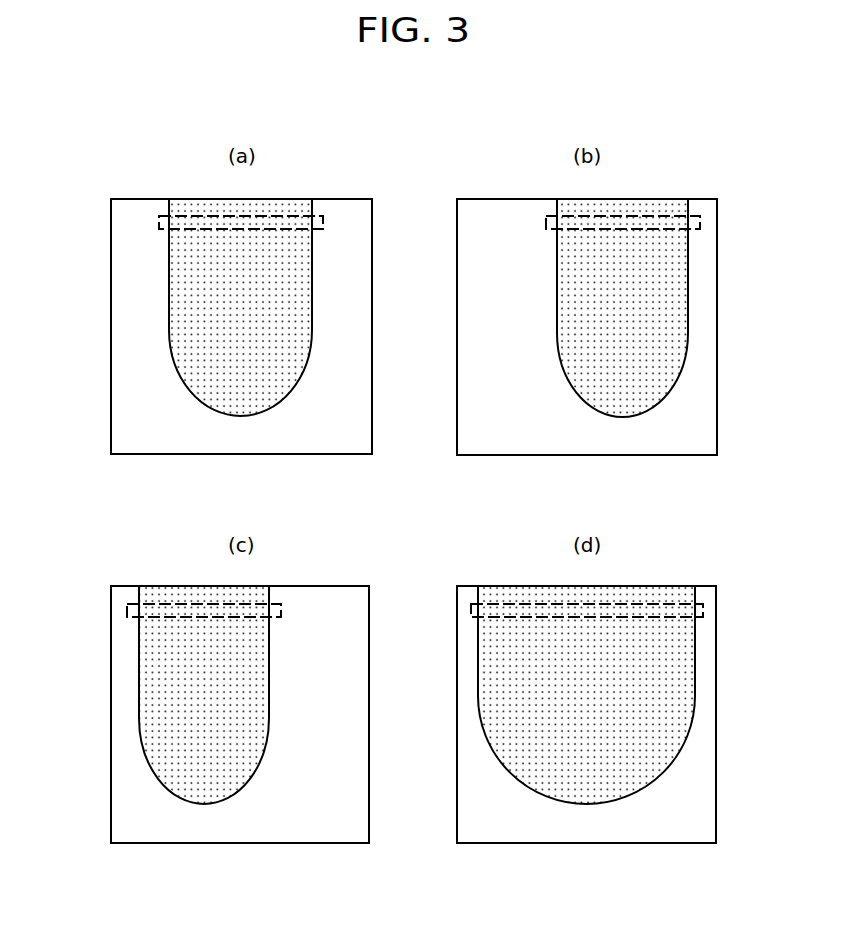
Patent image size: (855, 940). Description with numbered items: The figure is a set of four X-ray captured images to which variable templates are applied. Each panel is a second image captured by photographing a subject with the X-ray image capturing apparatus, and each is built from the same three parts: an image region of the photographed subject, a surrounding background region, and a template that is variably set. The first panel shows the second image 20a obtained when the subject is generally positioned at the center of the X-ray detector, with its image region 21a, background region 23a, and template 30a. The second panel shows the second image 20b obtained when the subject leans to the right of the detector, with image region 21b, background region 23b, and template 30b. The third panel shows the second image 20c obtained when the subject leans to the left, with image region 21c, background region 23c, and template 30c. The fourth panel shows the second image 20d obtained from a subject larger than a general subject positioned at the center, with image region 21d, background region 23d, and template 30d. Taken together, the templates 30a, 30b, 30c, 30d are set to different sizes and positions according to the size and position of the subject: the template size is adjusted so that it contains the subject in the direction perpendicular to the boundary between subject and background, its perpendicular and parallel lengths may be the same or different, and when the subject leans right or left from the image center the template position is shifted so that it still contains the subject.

The second image 20a is at (203, 344).
The second image 20b is at (625, 344).
The second image 20c is at (201, 731).
The second image 20d is at (625, 731).
The image region 21a is at (185, 325).
The image region 21b is at (675, 312).
The image region 21c is at (163, 713).
The image region 21d is at (672, 712).
The background region 23a is at (125, 279).
The background region 23b is at (710, 274).
The background region 23c is at (125, 667).
The background region 23d is at (710, 666).
The template 30a is at (73, 223).
The template 30b is at (755, 225).
The template 30c is at (73, 608).
The template 30d is at (752, 610).